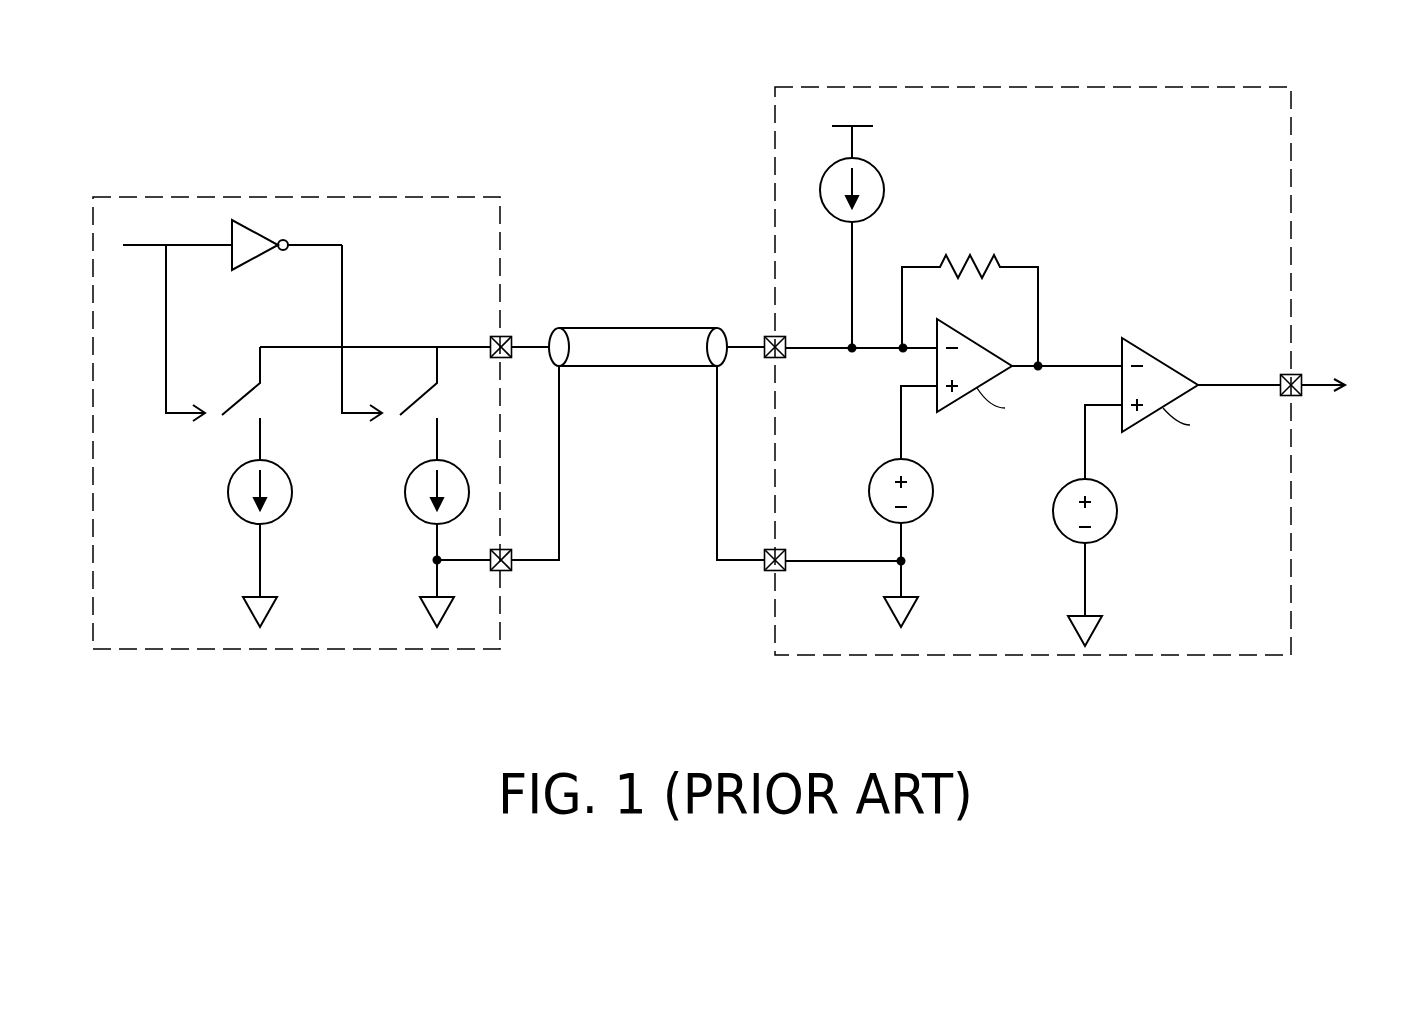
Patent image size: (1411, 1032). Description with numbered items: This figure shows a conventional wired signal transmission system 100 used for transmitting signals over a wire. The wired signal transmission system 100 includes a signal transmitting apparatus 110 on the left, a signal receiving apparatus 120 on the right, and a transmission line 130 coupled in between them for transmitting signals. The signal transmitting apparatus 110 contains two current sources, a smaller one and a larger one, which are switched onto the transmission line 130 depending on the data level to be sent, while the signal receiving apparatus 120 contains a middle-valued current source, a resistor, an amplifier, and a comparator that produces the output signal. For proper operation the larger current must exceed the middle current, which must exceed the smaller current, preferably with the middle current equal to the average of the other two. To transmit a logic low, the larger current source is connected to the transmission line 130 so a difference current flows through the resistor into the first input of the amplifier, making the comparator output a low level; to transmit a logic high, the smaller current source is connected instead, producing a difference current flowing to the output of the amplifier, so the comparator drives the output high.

The wired signal transmission system 100 is at (1362, 725).
The signal transmitting apparatus 110 is at (400, 195).
The signal receiving apparatus 120 is at (1195, 85).
The transmission line 130 is at (638, 327).